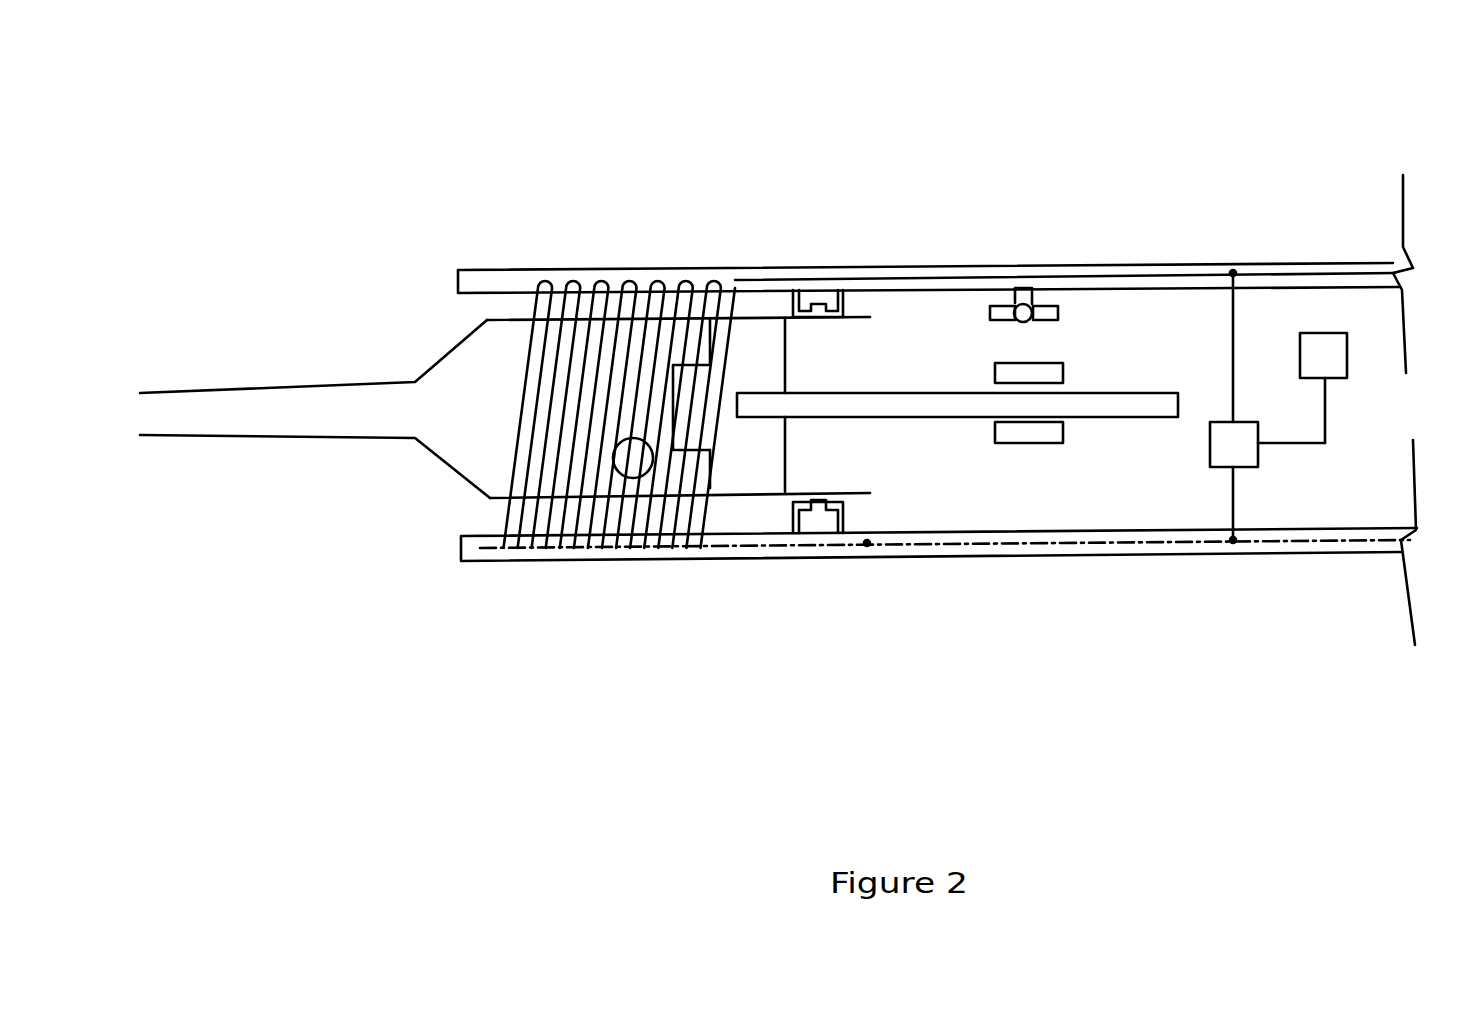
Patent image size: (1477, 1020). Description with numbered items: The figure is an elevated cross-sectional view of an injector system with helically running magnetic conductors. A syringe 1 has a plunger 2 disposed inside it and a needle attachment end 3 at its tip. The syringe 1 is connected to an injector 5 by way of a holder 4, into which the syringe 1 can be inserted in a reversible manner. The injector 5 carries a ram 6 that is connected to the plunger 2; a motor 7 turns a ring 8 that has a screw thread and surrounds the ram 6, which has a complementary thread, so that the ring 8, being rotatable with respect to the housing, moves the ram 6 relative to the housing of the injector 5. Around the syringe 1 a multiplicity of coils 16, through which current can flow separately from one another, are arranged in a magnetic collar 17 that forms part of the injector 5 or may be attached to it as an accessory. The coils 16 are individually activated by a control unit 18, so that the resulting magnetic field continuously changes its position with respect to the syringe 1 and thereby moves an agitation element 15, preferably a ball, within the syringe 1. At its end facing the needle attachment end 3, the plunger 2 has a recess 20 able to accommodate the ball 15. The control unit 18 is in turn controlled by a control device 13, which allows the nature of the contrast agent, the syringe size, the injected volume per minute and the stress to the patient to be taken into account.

The syringe 1 is at (503, 368).
The plunger 2 is at (781, 335).
The needle attachment end 3 is at (270, 410).
The holder 4 is at (838, 292).
The injector 5 is at (1195, 315).
The ram 6 is at (910, 402).
The motor 7 is at (1032, 290).
The ring 8 is at (1050, 362).
The control device 13 is at (1325, 358).
The agitation element 15 is at (622, 468).
The coils 16 is at (525, 437).
The magnetic collar 17 is at (628, 553).
The control unit 18 is at (1230, 445).
The recess 20 is at (710, 477).